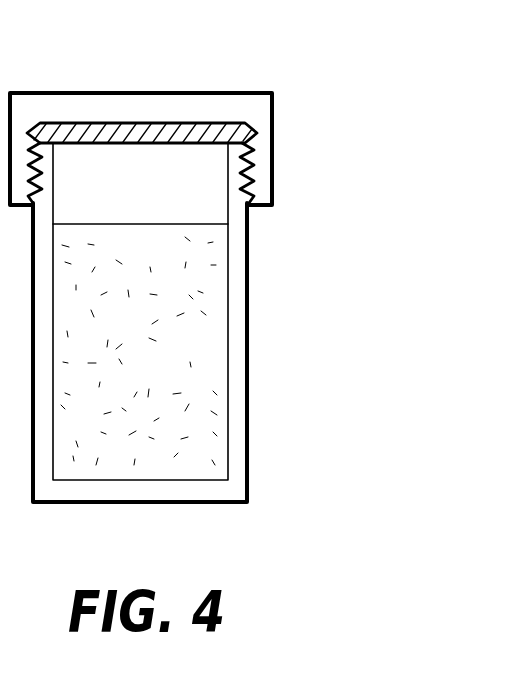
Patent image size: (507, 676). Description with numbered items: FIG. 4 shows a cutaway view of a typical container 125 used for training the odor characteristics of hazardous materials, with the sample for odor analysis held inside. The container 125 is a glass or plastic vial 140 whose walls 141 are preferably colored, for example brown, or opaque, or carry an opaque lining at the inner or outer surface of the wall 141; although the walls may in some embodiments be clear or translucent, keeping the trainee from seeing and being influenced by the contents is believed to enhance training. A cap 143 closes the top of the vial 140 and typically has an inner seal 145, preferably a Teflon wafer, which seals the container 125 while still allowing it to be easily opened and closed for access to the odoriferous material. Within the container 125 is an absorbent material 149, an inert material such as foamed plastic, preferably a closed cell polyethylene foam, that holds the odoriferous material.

The container 125 is at (255, 262).
The vial 140 is at (248, 315).
The walls 141 is at (237, 390).
The cap 143 is at (215, 87).
The inner seal 145 is at (155, 132).
The absorbent material 149 is at (204, 438).